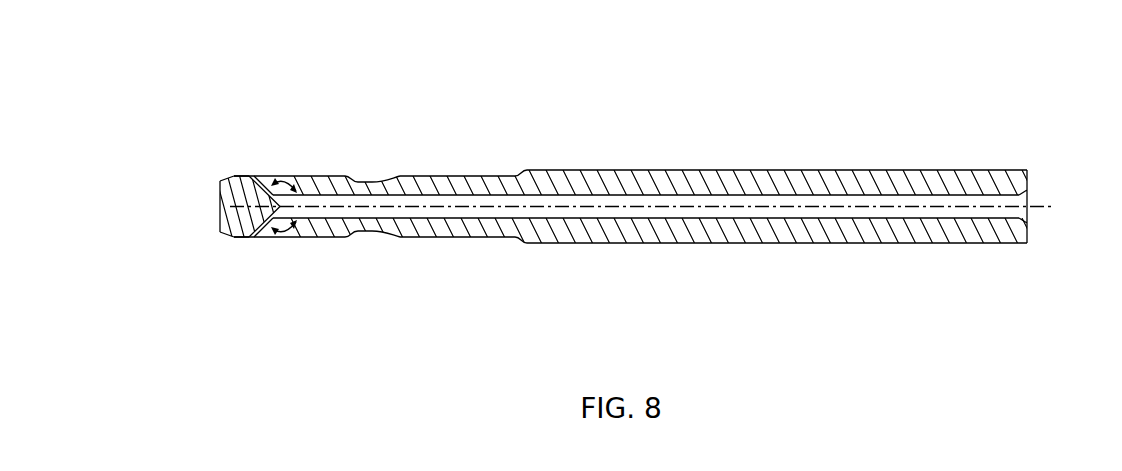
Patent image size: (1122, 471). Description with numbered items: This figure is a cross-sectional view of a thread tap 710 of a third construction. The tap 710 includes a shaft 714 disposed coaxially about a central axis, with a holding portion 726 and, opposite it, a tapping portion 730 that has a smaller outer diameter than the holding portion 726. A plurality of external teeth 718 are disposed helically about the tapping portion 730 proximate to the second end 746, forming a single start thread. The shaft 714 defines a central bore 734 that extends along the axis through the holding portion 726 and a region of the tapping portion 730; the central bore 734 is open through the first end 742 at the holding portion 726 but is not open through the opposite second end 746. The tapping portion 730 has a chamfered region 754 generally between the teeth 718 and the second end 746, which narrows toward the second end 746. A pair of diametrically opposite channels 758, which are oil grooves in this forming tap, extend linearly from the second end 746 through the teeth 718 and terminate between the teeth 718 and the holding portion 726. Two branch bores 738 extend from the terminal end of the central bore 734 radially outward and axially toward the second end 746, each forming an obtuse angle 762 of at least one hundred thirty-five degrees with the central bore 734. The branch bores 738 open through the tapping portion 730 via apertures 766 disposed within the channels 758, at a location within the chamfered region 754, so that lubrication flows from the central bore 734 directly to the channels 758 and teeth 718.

The thread tap 710 is at (666, 75).
The shaft 714 is at (455, 176).
The external teeth 718 is at (338, 176).
The holding portion 726 is at (863, 170).
The tapping portion 730 is at (303, 230).
The central bore 734 is at (742, 185).
The branch bores 738 is at (220, 201).
The first end 742 is at (1028, 182).
The second end 746 is at (220, 212).
The chamfered region 754 is at (228, 172).
The channels 758 is at (298, 186).
The obtuse angle 762 is at (276, 182).
The apertures 766 is at (250, 176).